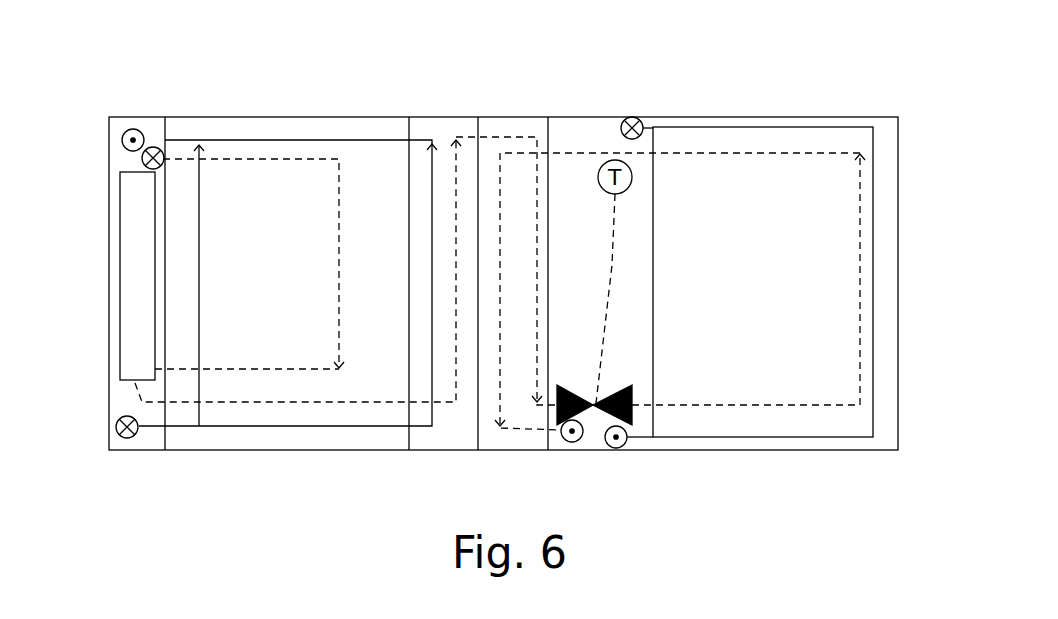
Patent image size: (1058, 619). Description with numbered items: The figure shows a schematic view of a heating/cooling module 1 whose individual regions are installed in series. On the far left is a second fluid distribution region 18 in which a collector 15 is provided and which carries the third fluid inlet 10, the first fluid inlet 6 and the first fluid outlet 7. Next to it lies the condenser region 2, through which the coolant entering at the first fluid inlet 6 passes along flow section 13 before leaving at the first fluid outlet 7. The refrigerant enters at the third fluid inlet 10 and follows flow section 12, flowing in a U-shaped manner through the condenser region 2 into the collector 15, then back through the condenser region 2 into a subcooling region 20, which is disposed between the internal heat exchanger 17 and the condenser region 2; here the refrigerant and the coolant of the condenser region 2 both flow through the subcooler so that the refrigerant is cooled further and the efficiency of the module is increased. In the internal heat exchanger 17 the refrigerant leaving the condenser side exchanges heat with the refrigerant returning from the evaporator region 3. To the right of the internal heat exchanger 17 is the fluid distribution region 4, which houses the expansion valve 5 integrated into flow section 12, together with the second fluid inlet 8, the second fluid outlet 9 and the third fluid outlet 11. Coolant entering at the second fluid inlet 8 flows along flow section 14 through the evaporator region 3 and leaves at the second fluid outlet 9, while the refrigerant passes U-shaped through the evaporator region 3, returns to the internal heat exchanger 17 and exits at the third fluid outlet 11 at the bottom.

The heating/cooling module 1 is at (528, 88).
The condenser region 2 is at (322, 116).
The evaporator region 3 is at (707, 116).
The fluid distribution region 4 is at (577, 116).
The expansion valve 5 is at (598, 412).
The first fluid inlet 6 is at (127, 440).
The first fluid outlet 7 is at (133, 128).
The second fluid inlet 8 is at (632, 117).
The second fluid outlet 9 is at (622, 448).
The third fluid inlet 10 is at (142, 162).
The third fluid outlet 11 is at (572, 443).
The flow section 12 is at (262, 158).
The flow section 13 is at (207, 138).
The flow section 14 is at (873, 298).
The collector 15 is at (135, 248).
The internal heat exchanger 17 is at (504, 116).
The second fluid distribution region 18 is at (109, 150).
The subcooling region 20 is at (418, 116).